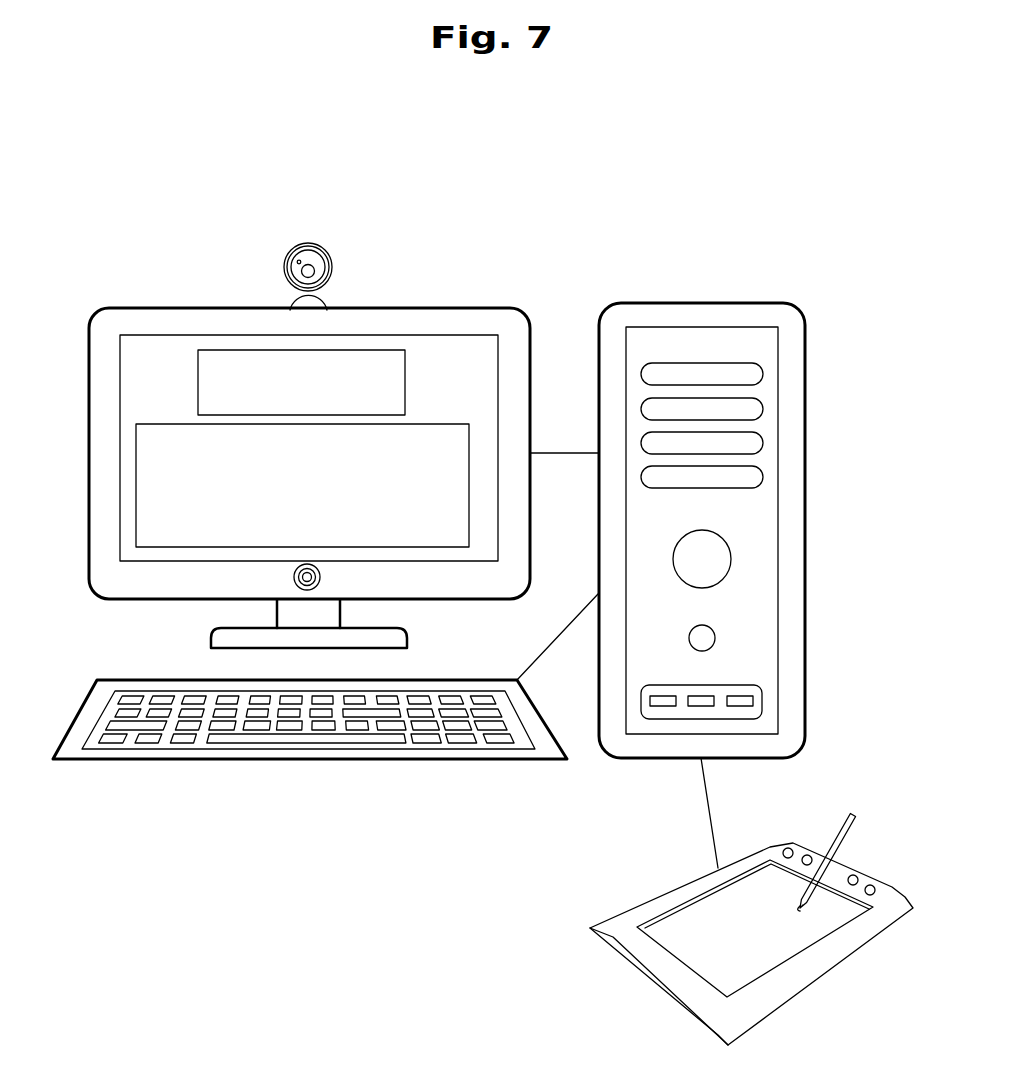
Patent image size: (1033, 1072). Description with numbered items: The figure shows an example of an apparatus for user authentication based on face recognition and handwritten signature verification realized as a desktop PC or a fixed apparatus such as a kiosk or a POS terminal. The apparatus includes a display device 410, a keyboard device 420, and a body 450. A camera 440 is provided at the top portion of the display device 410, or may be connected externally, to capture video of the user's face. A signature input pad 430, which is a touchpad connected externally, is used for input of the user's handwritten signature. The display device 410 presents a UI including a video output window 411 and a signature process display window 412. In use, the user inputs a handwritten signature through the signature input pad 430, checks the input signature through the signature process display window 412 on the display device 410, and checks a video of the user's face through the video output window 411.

The display device 410 is at (456, 310).
The video output window 411 is at (198, 355).
The signature process display window 412 is at (137, 453).
The keyboard device 420 is at (312, 755).
The signature input pad 430 is at (885, 880).
The camera 440 is at (294, 250).
The body 450 is at (703, 305).